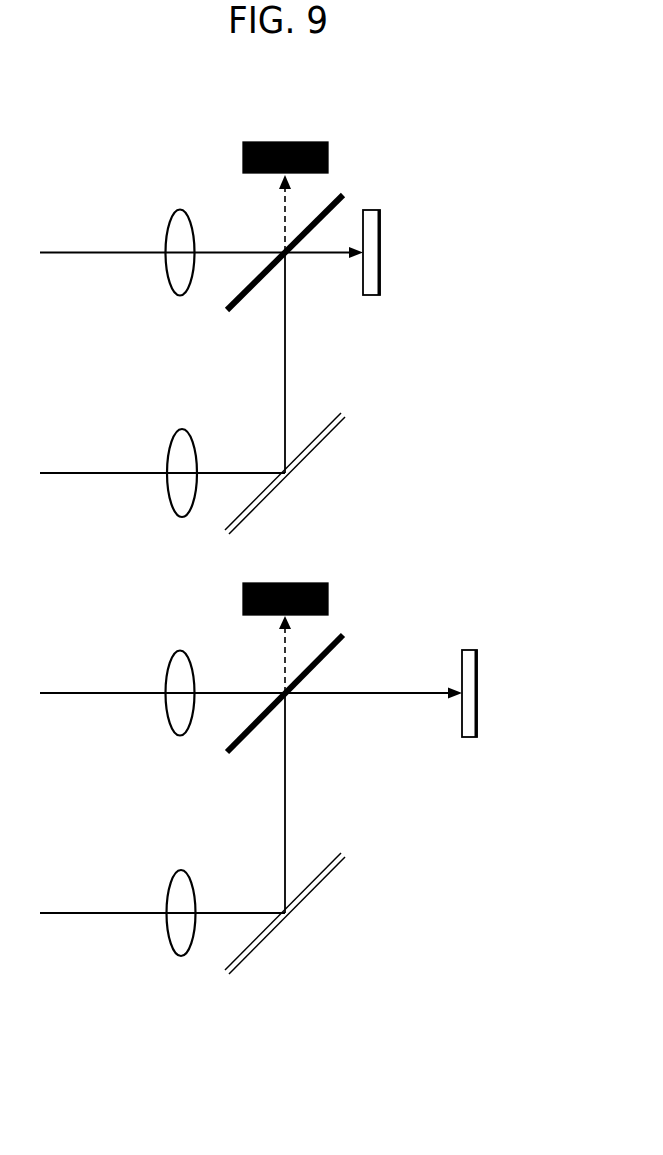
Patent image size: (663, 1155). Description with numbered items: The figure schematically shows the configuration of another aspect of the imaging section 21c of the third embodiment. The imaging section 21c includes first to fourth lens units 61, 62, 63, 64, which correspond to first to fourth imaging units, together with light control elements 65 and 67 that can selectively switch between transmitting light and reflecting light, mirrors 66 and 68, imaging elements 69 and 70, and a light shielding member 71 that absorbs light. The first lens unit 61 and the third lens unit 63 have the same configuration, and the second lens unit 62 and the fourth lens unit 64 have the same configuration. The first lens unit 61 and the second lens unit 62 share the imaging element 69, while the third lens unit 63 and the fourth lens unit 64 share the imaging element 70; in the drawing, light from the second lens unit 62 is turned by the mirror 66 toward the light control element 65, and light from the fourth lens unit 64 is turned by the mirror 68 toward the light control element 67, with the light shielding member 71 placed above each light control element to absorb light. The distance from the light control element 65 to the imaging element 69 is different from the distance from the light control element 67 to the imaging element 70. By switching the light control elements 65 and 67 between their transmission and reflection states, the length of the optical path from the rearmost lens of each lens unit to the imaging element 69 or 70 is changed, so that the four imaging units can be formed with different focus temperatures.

The imaging section 21c is at (463, 126).
The first lens unit 61 is at (170, 215).
The second lens unit 62 is at (170, 431).
The third lens unit 63 is at (170, 655).
The fourth lens unit 64 is at (170, 871).
The light control element 65 is at (337, 213).
The mirror 66 is at (334, 426).
The light control element 67 is at (334, 650).
The mirror 68 is at (332, 868).
The imaging element 69 is at (381, 285).
The imaging element 70 is at (478, 725).
The light shielding member 71 is at (302, 140).